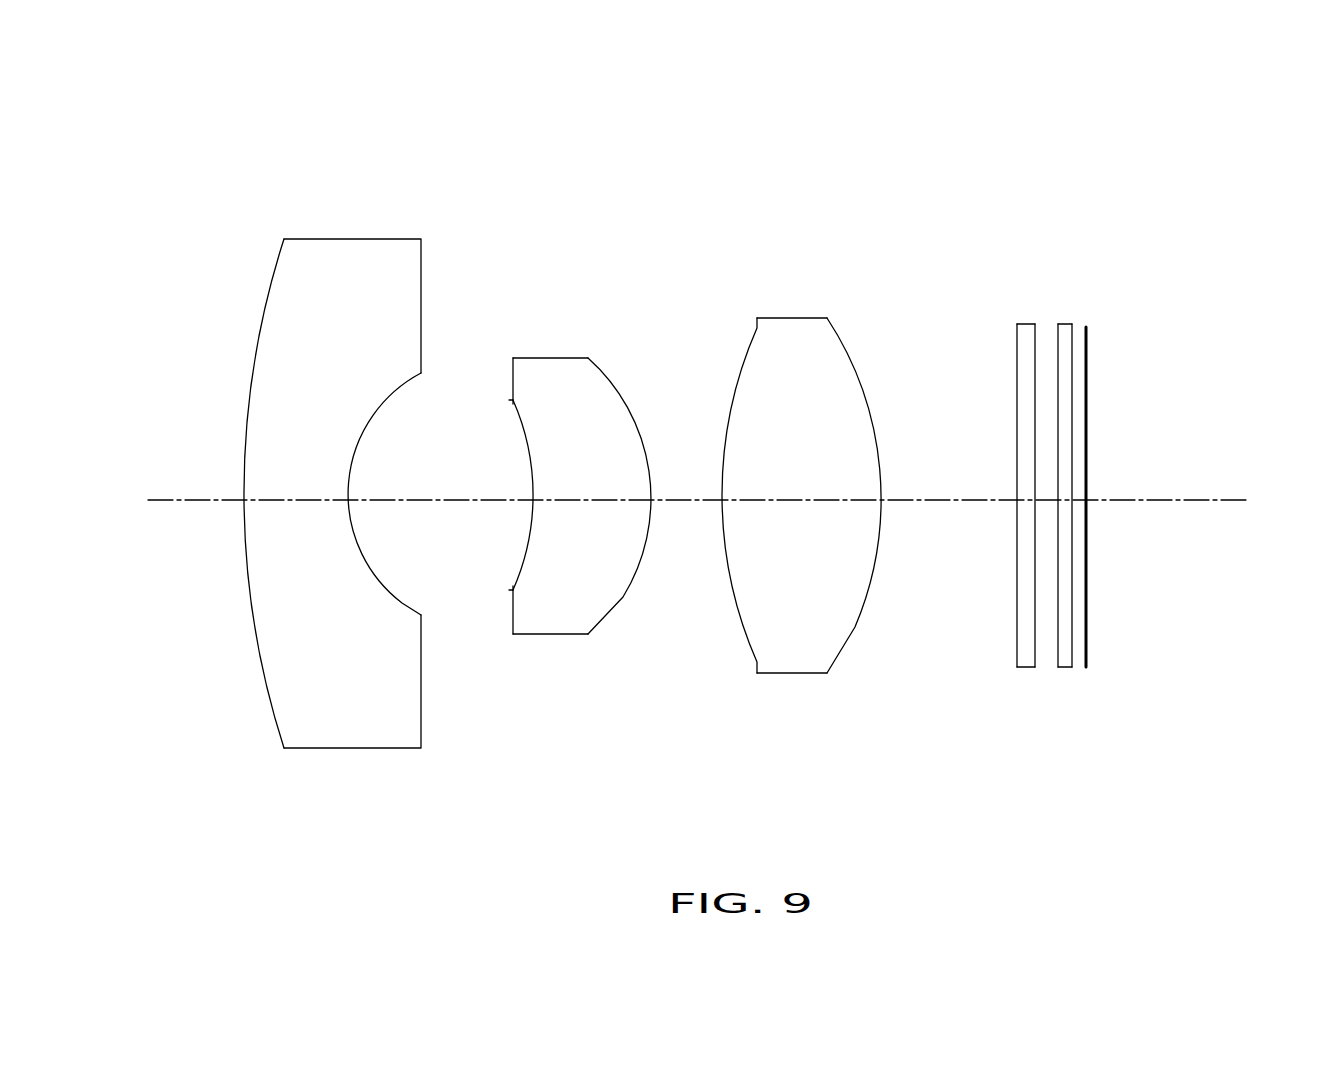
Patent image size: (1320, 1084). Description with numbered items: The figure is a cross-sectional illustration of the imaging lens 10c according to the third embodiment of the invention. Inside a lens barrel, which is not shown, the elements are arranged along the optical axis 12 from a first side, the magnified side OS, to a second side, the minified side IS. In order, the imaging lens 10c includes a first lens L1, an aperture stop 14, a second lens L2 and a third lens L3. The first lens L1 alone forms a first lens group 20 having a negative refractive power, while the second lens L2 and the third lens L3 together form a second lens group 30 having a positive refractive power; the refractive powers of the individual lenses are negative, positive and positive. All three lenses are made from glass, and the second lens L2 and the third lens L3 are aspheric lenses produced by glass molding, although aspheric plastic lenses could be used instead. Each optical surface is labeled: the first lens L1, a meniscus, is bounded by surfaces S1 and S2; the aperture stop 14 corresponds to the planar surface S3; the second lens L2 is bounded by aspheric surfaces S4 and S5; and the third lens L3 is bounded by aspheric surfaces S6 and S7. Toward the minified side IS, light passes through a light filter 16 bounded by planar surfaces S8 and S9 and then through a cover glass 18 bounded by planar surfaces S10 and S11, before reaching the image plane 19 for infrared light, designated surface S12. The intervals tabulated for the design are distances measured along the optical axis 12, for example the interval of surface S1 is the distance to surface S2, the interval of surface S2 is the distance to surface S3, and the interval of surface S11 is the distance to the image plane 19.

The imaging lens 10c is at (192, 112).
The optical axis 12 is at (202, 499).
The aperture stop 14 is at (508, 400).
The light filter 16 is at (1030, 325).
The cover glass 18 is at (1063, 325).
The image plane 19 is at (1087, 347).
The first lens group 20 is at (253, 152).
The second lens group 30 is at (518, 152).
The first lens L1 is at (345, 258).
The second lens L2 is at (556, 370).
The third lens L3 is at (798, 325).
The magnified side OS is at (162, 243).
The minified side IS is at (1247, 252).
The surface S1 is at (260, 655).
The surface S2 is at (402, 603).
The surface S3 is at (513, 590).
The surface S4 is at (522, 568).
The surface S5 is at (623, 597).
The surface S6 is at (740, 620).
The surface S7 is at (855, 627).
The surface S8 is at (1017, 640).
The surface S9 is at (1035, 640).
The surface S10 is at (1058, 640).
The surface S11 is at (1072, 645).
The surface S12 is at (1088, 640).